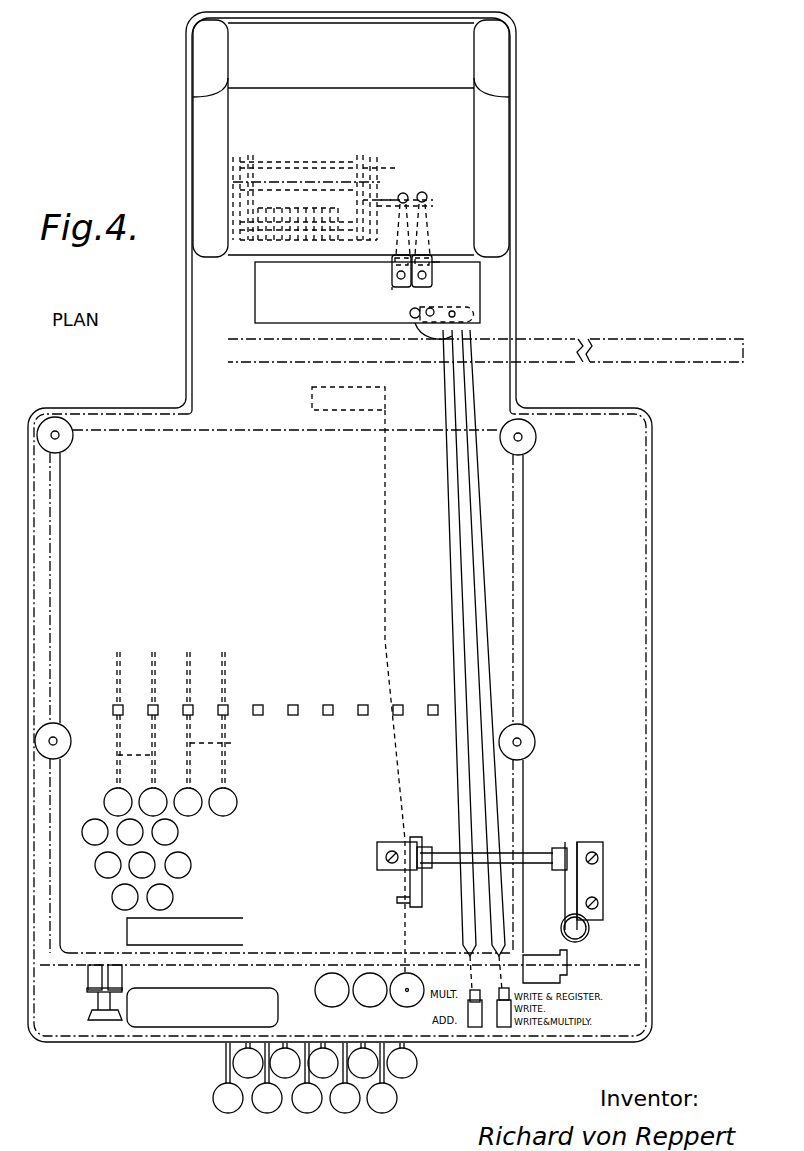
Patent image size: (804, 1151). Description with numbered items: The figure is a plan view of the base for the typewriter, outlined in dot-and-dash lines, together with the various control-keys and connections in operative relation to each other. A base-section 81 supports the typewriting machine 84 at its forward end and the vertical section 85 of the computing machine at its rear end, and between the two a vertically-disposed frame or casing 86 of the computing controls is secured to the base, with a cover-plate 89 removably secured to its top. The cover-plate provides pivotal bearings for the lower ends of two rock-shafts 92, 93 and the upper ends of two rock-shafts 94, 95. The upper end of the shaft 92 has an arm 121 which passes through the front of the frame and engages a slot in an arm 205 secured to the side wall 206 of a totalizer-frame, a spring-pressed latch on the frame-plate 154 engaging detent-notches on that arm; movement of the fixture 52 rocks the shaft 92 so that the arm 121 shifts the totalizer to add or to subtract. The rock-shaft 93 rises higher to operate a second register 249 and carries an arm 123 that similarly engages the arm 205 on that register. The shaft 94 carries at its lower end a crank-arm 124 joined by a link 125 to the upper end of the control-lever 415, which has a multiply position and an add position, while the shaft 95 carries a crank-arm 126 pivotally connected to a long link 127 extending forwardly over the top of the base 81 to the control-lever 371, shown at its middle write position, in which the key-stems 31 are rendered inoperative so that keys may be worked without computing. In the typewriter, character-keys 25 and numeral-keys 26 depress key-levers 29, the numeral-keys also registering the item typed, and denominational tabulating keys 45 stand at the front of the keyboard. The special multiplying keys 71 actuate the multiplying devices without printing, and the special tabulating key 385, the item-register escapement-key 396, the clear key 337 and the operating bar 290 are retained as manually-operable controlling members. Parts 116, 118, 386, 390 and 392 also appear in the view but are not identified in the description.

The base-section 81 is at (340, 527).
The vertical section of the computing machine 85 is at (351, 138).
The frame or casing of the computing controls 86 is at (246, 296).
The cover-plate 89 is at (282, 293).
The fixture 52 is at (485, 338).
The side wall of the totalizer-frame 206 is at (358, 160).
The frame-plate 154 is at (375, 166).
The totalizer or register 249 is at (310, 244).
The arm 205 is at (402, 194).
The arm 121 is at (398, 220).
The arm 123 is at (428, 216).
The rock-shaft 92 is at (396, 276).
The rock-shaft 93 is at (427, 276).
The pin 118 is at (432, 262).
The pivot 116 is at (396, 288).
The rock-shaft 95 is at (428, 310).
The rock-shaft 94 is at (410, 313).
The crank-arm 126 is at (452, 308).
The crank-arm 124 is at (420, 333).
The link 125 is at (447, 381).
The long link 127 is at (472, 380).
The typewriting machine 84 is at (524, 686).
The key-stems 31 is at (228, 708).
The key-levers 29 is at (116, 755).
The numeral-keys 26 is at (108, 793).
The character-keys 25 is at (97, 859).
The shaft 386 is at (537, 858).
The plate 390 is at (422, 893).
The item-register escapement-key 396 is at (588, 934).
The special tabulating key 385 is at (545, 966).
The clear key 337 is at (108, 1022).
The operating bar 290 is at (202, 1007).
The denominational tabulating keys 45 is at (360, 1002).
The knob 392 is at (406, 1007).
The control-lever 415 is at (480, 1028).
The control-lever 371 is at (510, 1028).
The special multiplying keys 71 is at (222, 1082).